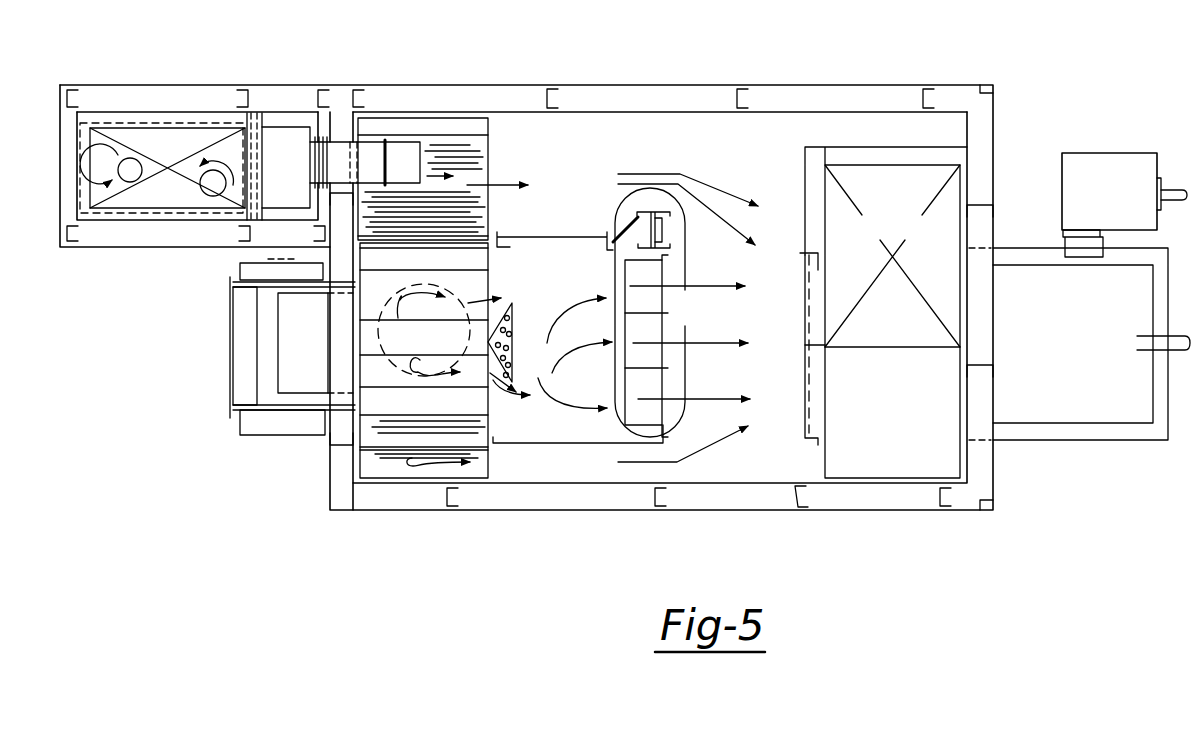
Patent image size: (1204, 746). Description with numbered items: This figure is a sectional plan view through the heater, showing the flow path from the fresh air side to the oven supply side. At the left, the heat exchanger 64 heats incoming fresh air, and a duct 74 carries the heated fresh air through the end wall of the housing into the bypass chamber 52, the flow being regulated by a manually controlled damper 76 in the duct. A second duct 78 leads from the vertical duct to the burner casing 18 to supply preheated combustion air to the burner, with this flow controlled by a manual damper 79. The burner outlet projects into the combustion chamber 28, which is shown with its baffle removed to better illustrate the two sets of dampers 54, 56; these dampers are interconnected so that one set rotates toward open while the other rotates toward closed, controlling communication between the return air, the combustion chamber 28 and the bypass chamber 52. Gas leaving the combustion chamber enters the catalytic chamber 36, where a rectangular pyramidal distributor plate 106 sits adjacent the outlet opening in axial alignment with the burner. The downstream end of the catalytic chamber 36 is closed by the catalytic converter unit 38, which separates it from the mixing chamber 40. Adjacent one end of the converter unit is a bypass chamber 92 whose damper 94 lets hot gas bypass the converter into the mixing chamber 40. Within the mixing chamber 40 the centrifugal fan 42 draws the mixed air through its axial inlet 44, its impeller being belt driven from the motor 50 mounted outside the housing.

The casing 18 is at (278, 412).
The combustion chamber 28 is at (470, 297).
The catalytic chamber 36 is at (546, 255).
The catalytic converter unit 38 is at (622, 358).
The mixing chamber 40 is at (775, 180).
The centrifugal fan 42 is at (843, 258).
The axial inlet 44 is at (801, 352).
The motor 50 is at (1124, 160).
The bypass chamber 52 is at (577, 123).
The dampers 54 is at (450, 419).
The dampers 56 is at (480, 155).
The heat exchanger 64 is at (207, 116).
The duct 74 is at (372, 148).
The manually controlled damper 76 is at (398, 158).
The duct 78 is at (268, 242).
The manual damper 79 is at (292, 263).
The bypass chamber 92 is at (632, 225).
The damper 94 is at (660, 223).
The rectangular pyramidal distributor plate 106 is at (510, 322).